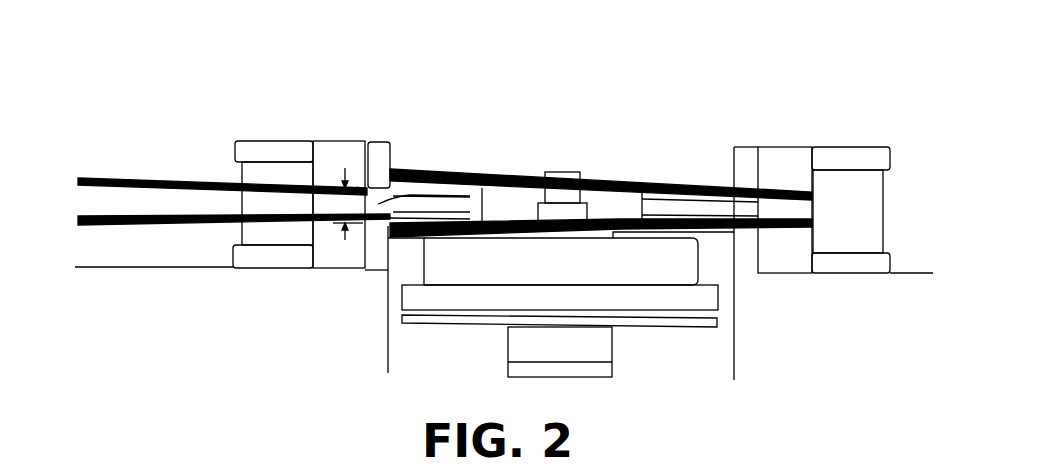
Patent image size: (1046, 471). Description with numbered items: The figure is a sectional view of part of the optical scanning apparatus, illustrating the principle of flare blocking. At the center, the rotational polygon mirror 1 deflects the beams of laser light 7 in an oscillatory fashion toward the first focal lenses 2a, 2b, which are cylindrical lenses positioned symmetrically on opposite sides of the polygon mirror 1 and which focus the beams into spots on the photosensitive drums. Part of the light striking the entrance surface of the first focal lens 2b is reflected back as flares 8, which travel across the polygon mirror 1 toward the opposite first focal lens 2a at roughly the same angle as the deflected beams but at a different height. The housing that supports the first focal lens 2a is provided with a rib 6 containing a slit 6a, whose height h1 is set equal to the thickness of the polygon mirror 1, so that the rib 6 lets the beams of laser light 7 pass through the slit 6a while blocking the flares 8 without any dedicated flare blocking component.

The polygon mirror 1 is at (607, 197).
The first focal lens 2a is at (360, 145).
The first focal lens 2b is at (802, 157).
The rib 6 is at (385, 140).
The slit 6a is at (418, 172).
The beams of laser light 7 is at (198, 215).
The flares 8 is at (483, 223).
The height of the slit h1 is at (347, 217).